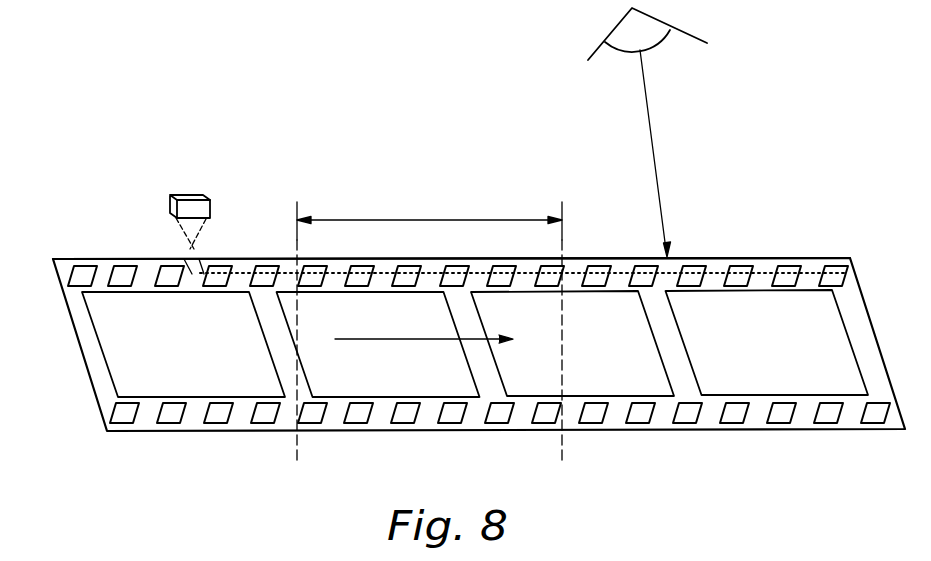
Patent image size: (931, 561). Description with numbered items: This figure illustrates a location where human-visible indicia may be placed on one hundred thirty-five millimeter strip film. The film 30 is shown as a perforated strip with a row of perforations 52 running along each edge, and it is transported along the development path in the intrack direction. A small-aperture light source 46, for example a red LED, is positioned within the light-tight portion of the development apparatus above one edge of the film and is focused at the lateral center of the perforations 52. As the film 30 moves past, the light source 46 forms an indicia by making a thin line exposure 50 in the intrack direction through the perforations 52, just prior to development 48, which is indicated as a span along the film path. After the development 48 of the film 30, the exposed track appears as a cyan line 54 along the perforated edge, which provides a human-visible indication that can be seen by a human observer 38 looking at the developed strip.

The film 30 is at (230, 412).
The human observer 38 is at (618, 48).
The light source 46 is at (190, 197).
The development 48 is at (427, 218).
The thin line exposure 50 is at (183, 260).
The perforations 52 is at (120, 280).
The cyan line 54 is at (725, 260).